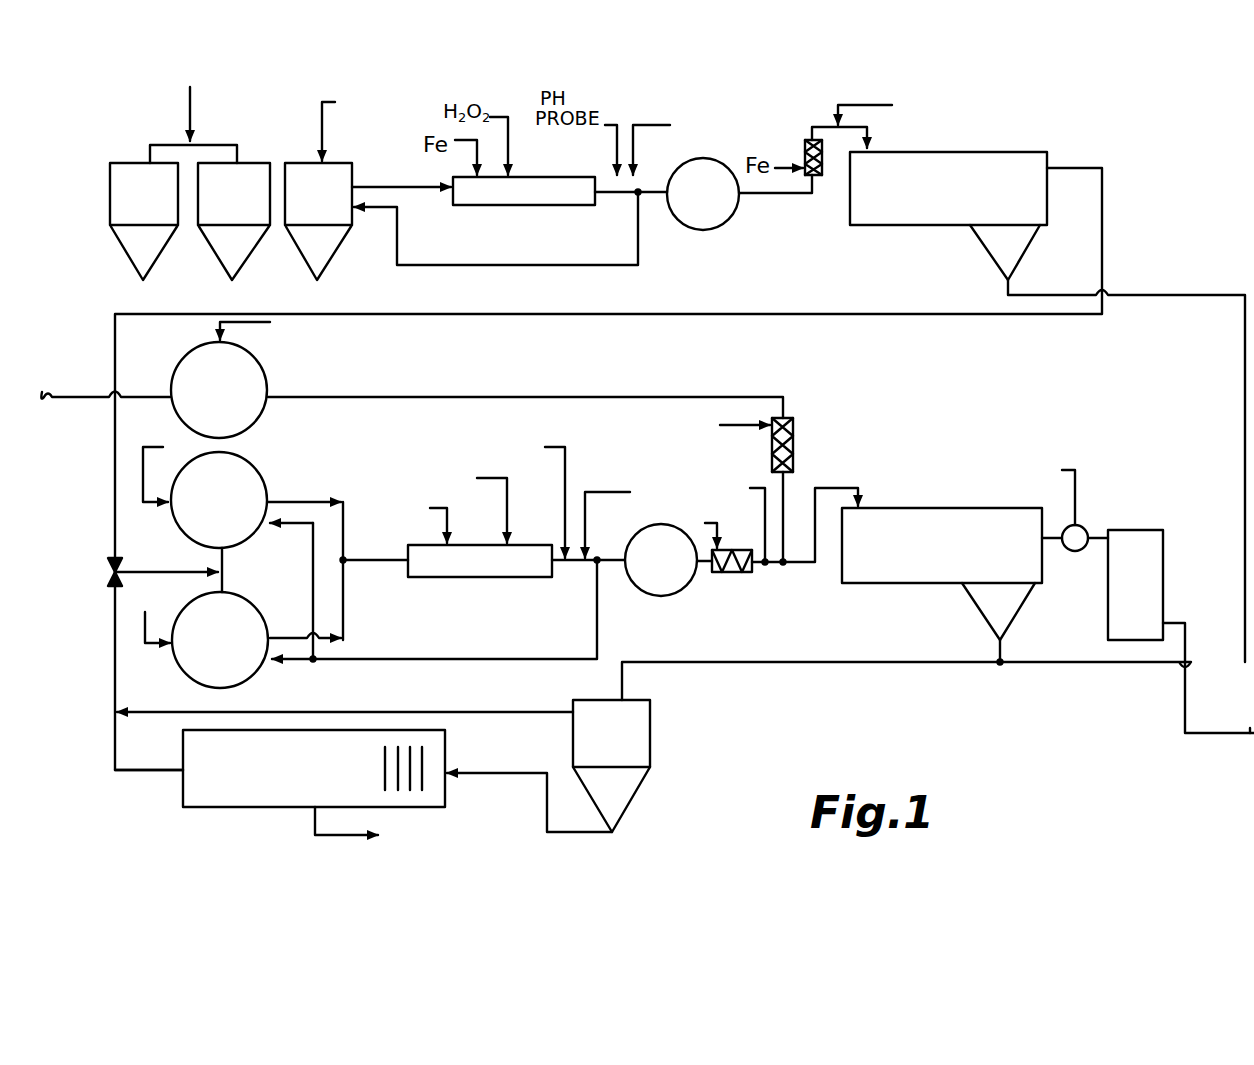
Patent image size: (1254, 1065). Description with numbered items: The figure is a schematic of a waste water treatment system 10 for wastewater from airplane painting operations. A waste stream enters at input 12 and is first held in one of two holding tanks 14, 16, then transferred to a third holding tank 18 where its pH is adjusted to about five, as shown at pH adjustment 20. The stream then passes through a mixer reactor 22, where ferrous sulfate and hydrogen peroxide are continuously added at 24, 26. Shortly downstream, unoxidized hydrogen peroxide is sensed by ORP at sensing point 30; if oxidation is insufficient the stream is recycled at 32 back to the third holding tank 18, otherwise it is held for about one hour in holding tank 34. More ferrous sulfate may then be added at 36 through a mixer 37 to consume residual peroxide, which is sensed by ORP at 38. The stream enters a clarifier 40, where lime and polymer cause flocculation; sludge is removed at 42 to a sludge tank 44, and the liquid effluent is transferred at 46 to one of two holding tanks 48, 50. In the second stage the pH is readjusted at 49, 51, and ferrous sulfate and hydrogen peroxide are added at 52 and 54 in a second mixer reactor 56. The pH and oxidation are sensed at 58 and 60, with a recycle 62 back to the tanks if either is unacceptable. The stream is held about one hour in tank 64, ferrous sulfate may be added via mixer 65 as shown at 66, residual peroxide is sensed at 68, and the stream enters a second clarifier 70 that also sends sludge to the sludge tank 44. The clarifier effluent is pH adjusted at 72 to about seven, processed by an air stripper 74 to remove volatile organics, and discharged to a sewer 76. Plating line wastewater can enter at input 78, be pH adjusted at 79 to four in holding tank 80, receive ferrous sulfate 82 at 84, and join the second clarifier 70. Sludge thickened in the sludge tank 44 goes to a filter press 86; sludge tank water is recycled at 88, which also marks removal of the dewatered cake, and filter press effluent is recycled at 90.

The waste water treatment system 10 is at (955, 700).
The waste stream input 12 is at (190, 107).
The holding tank 14 is at (122, 258).
The holding tank 16 is at (218, 262).
The third holding tank 18 is at (352, 175).
The pH adjustment 20 is at (322, 120).
The mixer reactor 22 is at (507, 206).
The ferrous sulfate addition 24 is at (468, 144).
The hydrogen peroxide addition 26 is at (508, 152).
The hydrogen peroxide sensing point 30 is at (645, 118).
The recycle 32 is at (535, 268).
The holding tank 34 is at (725, 160).
The ferrous sulfate addition 36 is at (805, 140).
The mixer 37 is at (822, 178).
The ORP sensing point 38 is at (618, 125).
The clarifier 40 is at (1010, 150).
The sludge removal 42 is at (1058, 294).
The sludge tank 44 is at (650, 745).
The effluent transfer 46 is at (1102, 252).
The holding tank 48 is at (268, 486).
The pH adjustment 49 is at (143, 462).
The holding tank 50 is at (255, 605).
The pH adjustment 51 is at (145, 652).
The ferrous sulfate addition 52 is at (430, 515).
The hydrogen peroxide addition 54 is at (507, 512).
The second mixer reactor 56 is at (470, 578).
The pH sensing point 58 is at (565, 470).
The oxidation sensing point 60 is at (585, 522).
The recycle 62 is at (430, 662).
The holding tank 64 is at (682, 596).
The mixer 65 is at (735, 572).
The ferrous sulfate addition 66 is at (725, 538).
The ORP sensing point 68 is at (765, 480).
The second clarifier 70 is at (905, 506).
The pH adjustment 72 is at (1075, 478).
The air stripper 74 is at (1108, 606).
The sewer 76 is at (1185, 714).
The plating line wastewater input 78 is at (80, 395).
The pH adjustment 79 is at (270, 340).
The holding tank 80 is at (268, 396).
The ferrous sulfate 82 is at (690, 425).
The ferrous sulfate addition point 84 is at (793, 450).
The filter press 86 is at (445, 732).
The recycle / dewatered sludge removal 88 is at (530, 710).
The filter press effluent recycle 90 is at (140, 770).